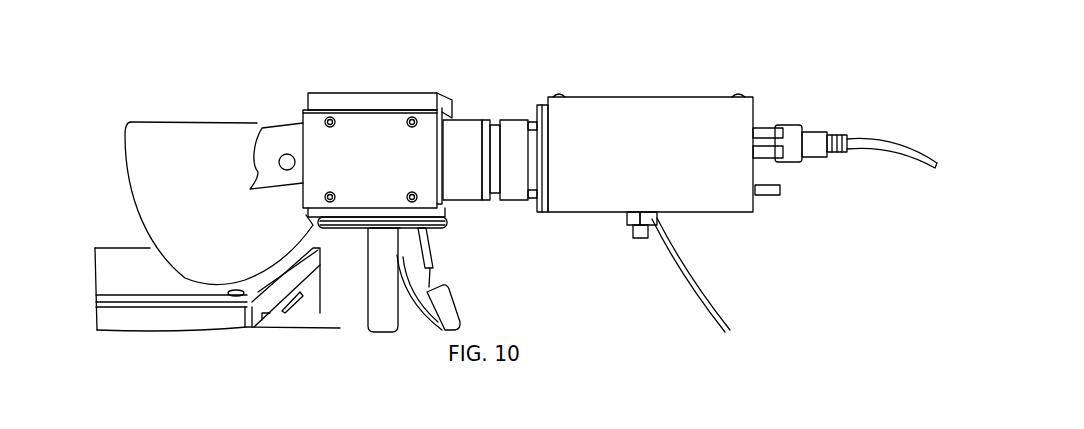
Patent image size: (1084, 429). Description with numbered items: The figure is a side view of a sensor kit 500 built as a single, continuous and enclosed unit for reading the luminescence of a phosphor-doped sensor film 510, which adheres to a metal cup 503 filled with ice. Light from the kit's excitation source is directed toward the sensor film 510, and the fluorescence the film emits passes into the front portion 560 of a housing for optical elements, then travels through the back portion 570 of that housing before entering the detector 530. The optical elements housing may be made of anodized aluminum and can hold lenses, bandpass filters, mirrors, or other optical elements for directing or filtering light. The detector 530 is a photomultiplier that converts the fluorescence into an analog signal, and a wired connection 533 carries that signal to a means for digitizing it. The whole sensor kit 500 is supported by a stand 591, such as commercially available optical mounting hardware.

The sensor kit 500 is at (814, 108).
The eyepiece cup 503 is at (153, 200).
The sensor film 510 is at (285, 140).
The front portion of optical elements housing 560 is at (365, 130).
The back portion of optical elements housing 570 is at (513, 168).
The detector 530 is at (670, 183).
The wired connection 533 is at (873, 147).
The stand 591 is at (380, 305).